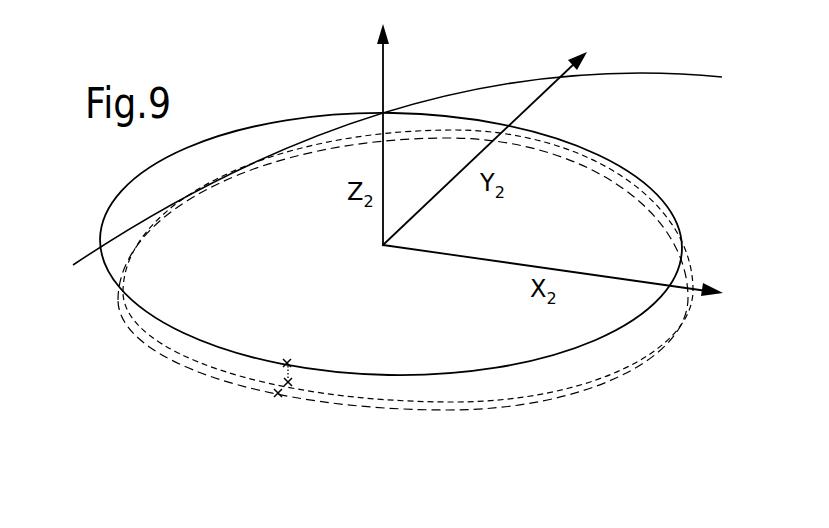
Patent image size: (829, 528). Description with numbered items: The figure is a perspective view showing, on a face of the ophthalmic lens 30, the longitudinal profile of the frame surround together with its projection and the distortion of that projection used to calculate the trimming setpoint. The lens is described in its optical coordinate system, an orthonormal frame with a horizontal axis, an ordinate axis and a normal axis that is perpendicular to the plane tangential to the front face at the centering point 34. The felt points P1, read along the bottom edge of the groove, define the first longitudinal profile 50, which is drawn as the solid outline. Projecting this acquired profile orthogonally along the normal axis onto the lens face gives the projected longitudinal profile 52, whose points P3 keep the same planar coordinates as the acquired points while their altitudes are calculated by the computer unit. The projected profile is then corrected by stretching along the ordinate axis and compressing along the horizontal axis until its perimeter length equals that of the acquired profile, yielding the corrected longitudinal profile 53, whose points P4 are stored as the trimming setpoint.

The ophthalmic lens 30 is at (640, 76).
The centering point 34 is at (383, 248).
The first longitudinal profile 50 is at (597, 150).
The projected longitudinal profile 52 is at (658, 362).
The corrected longitudinal profile 53 is at (711, 318).
The felt points P1 is at (287, 353).
The points of the projected longitudinal profile P3 is at (295, 384).
The points of the corrected longitudinal profile P4 is at (270, 412).